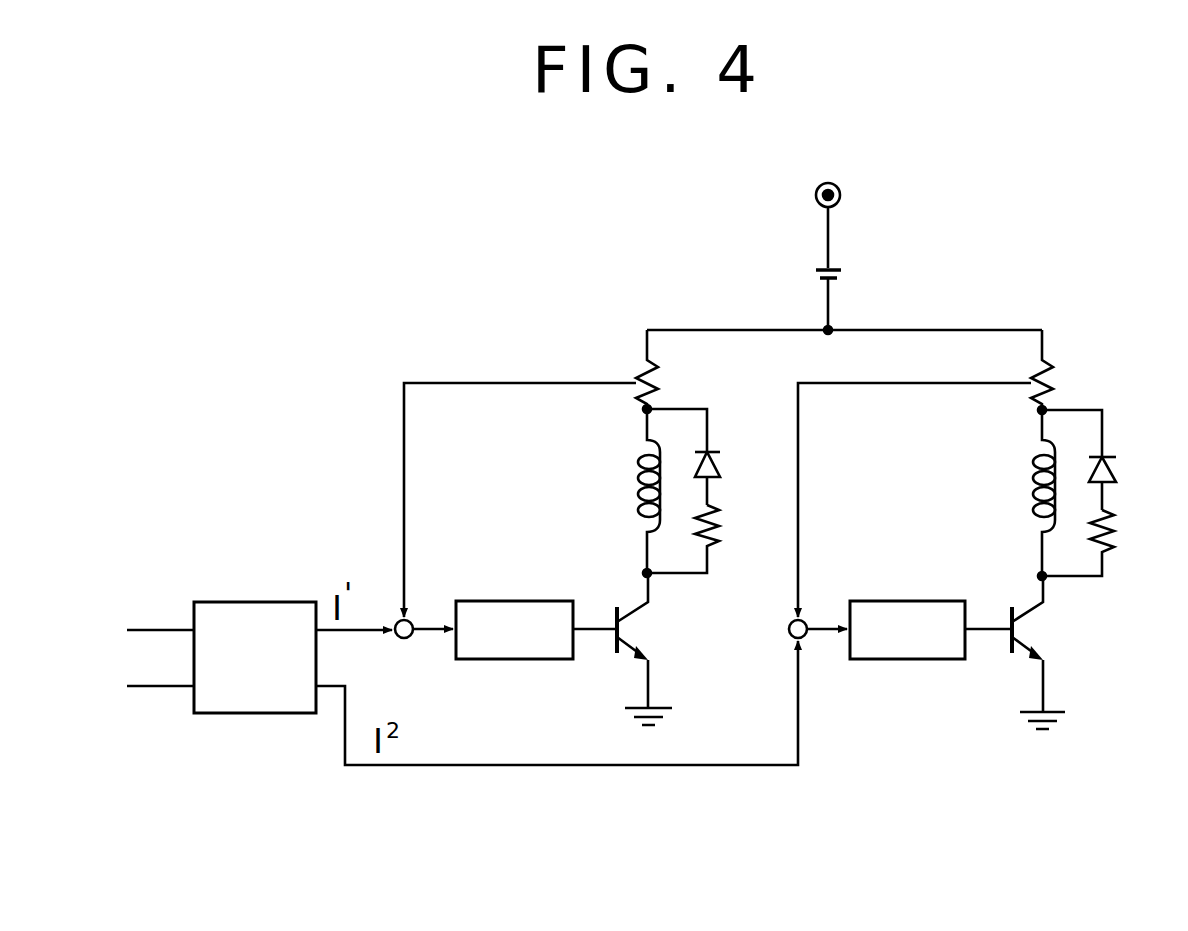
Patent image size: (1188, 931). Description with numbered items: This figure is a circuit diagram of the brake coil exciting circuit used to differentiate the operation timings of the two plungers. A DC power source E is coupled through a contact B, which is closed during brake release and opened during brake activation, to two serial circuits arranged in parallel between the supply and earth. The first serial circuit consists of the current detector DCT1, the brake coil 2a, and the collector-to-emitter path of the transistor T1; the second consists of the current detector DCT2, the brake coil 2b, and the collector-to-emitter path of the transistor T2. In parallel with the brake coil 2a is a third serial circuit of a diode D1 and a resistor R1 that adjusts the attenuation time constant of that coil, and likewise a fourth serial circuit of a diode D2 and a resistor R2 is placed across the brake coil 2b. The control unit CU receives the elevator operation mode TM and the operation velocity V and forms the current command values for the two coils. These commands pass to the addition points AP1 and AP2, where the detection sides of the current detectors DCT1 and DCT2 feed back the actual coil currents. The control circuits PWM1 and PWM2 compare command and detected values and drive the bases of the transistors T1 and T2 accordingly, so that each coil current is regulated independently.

The control unit CU is at (262, 602).
The operation mode TM is at (160, 611).
The operation velocity V is at (160, 665).
The addition point AP1 is at (410, 637).
The control circuit PWM1 is at (493, 630).
The transistor T1 is at (629, 649).
The current detector DCT1 is at (531, 473).
The brake coil 2a is at (626, 491).
The diode D1 is at (705, 457).
The resistor R1 is at (705, 539).
The DC power source E is at (843, 221).
The contact B is at (844, 295).
The addition point AP2 is at (805, 636).
The control circuit PWM2 is at (886, 630).
The transistor T2 is at (1027, 652).
The current detector DCT2 is at (925, 473).
The brake coil 2b is at (1022, 493).
The diode D2 is at (1105, 460).
The resistor R2 is at (1105, 543).